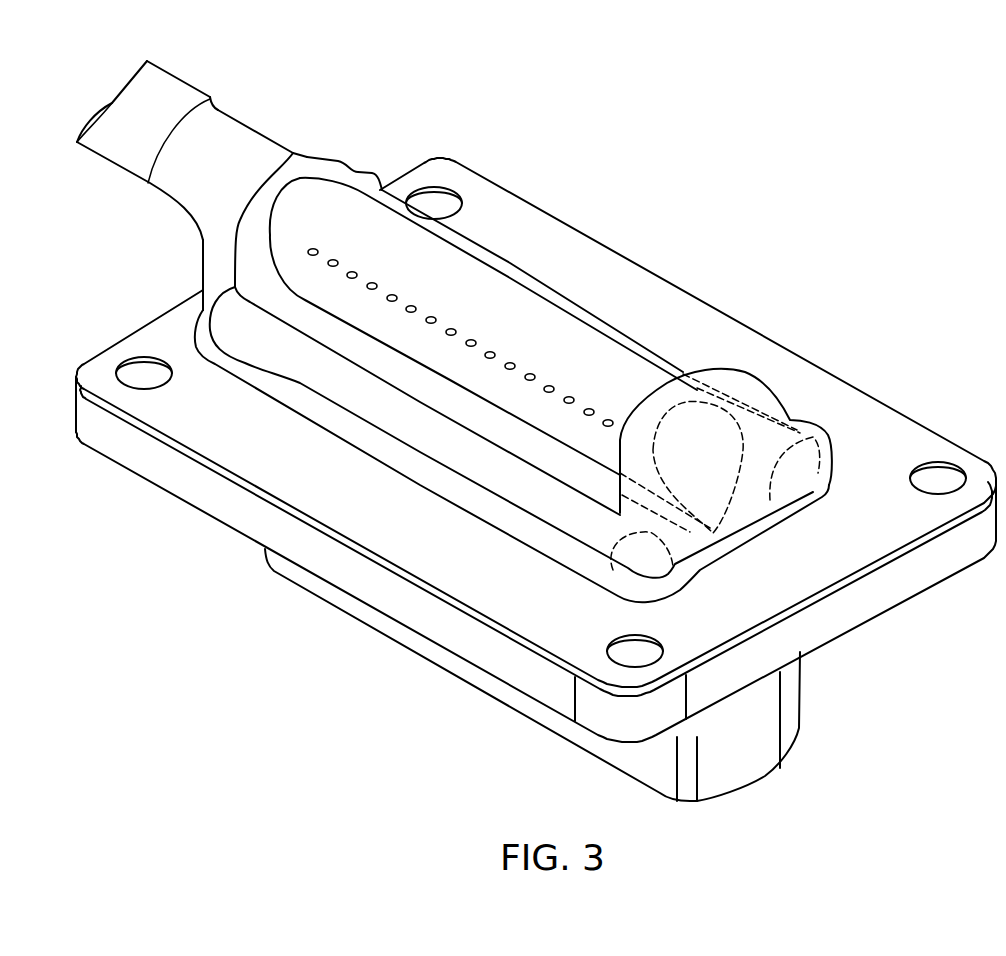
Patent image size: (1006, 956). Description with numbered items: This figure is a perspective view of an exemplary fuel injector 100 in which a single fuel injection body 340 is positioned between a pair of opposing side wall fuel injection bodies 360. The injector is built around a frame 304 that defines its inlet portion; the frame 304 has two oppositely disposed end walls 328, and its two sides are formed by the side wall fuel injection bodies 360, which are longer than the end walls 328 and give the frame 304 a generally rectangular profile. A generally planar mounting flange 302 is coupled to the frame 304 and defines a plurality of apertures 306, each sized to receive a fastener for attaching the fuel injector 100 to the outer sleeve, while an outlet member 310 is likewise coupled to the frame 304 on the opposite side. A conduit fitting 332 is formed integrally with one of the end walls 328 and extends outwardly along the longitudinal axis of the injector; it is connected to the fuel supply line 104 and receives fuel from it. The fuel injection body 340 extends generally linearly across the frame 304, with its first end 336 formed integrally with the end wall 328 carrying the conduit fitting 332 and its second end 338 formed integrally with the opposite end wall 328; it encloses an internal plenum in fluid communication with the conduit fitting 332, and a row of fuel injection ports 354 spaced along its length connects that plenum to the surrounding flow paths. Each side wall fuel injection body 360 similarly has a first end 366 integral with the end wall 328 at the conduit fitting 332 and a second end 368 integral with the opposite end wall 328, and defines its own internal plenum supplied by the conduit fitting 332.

The fuel injector 100 is at (846, 104).
The fuel supply line 104 is at (173, 87).
The mounting flange 302 is at (880, 423).
The frame 304 is at (477, 424).
The apertures 306 is at (141, 376).
The outlet member 310 is at (810, 693).
The end walls 328 is at (250, 243).
The conduit fitting 332 is at (230, 130).
The first end of fuel injection body 336 is at (323, 193).
The second end of fuel injection body 338 is at (663, 400).
The fuel injection body 340 is at (506, 317).
The fuel injection ports 354 is at (420, 303).
The side wall fuel injection bodies 360 is at (573, 313).
The first end of side wall fuel injection body 366 is at (210, 300).
The second end of side wall fuel injection body 368 is at (543, 560).